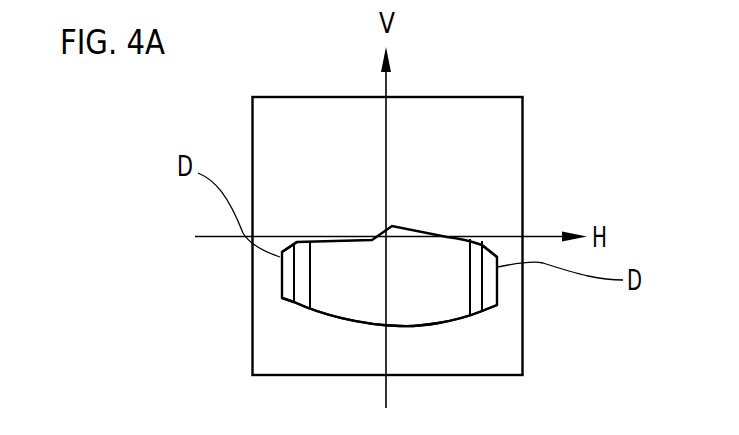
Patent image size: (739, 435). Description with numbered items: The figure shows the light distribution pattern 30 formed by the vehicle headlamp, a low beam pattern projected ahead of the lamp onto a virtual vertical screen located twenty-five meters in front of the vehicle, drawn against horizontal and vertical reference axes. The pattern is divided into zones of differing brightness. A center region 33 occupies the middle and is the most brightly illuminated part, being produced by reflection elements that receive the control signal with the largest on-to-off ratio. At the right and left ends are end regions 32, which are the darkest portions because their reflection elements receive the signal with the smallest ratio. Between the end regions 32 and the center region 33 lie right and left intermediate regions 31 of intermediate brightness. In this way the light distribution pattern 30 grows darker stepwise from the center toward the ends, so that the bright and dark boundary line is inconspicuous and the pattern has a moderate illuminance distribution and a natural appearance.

The light distribution pattern 30 is at (435, 247).
The intermediate regions 31 is at (303, 297).
The end regions 32 is at (288, 273).
The center region 33 is at (428, 305).